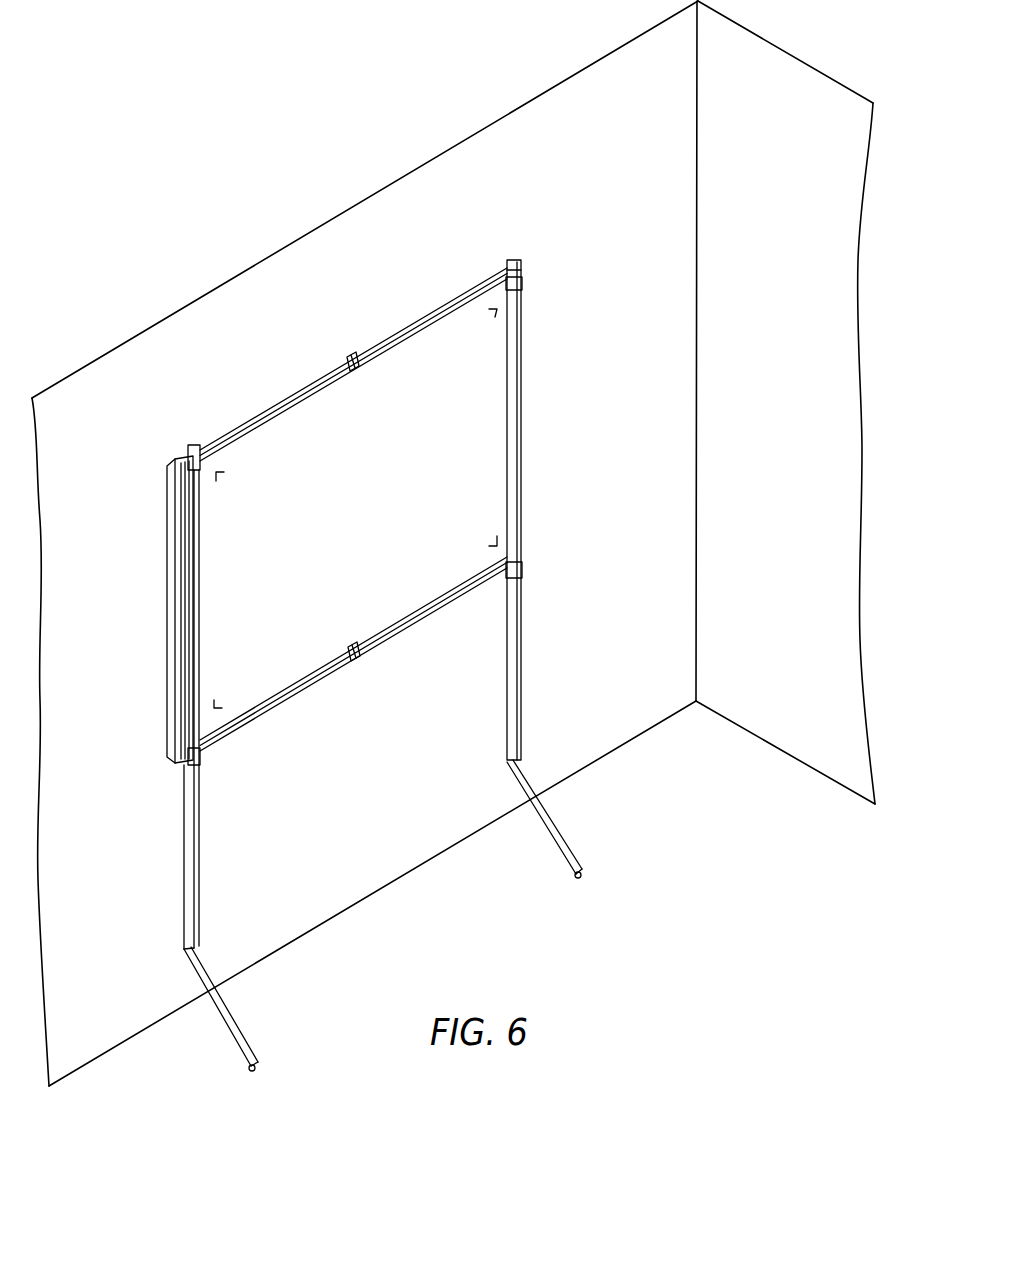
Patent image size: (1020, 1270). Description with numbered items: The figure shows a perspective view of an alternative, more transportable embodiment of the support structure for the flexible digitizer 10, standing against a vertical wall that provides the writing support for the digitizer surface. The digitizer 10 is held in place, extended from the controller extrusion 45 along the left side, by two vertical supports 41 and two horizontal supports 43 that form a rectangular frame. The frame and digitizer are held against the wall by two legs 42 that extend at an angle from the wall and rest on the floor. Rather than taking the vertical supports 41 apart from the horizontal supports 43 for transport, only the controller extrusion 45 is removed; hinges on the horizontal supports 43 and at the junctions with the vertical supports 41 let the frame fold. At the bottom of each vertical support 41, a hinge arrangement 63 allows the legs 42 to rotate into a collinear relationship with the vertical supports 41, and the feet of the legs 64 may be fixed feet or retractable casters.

The digitizer 10 is at (443, 340).
The vertical supports 41 is at (522, 675).
The legs 42 is at (565, 832).
The horizontal supports 43 is at (318, 684).
The controller extrusion 45 is at (176, 595).
The hinge arrangement 63 is at (196, 951).
The feet of the legs 64 is at (261, 1058).